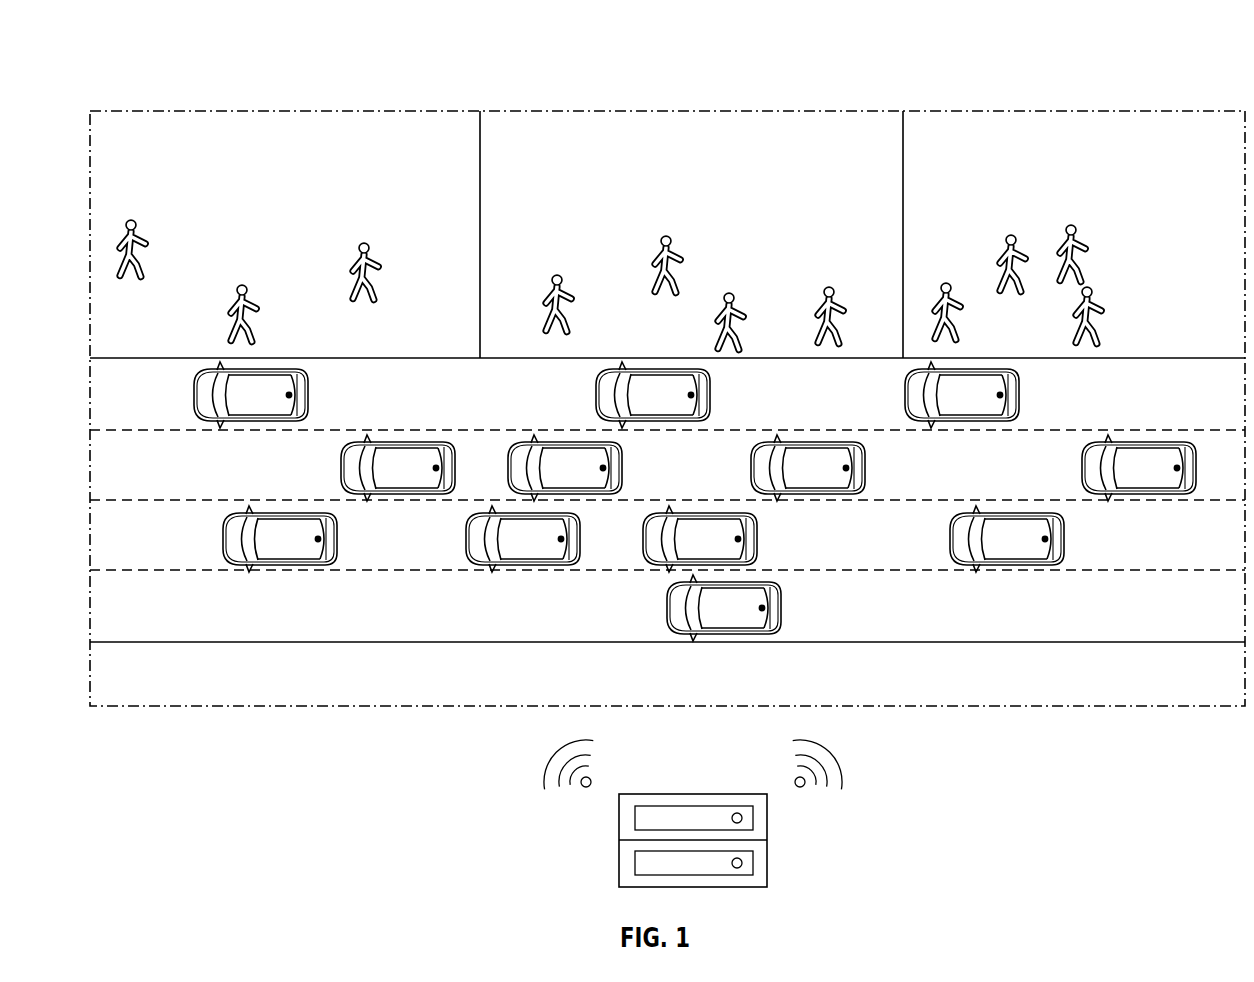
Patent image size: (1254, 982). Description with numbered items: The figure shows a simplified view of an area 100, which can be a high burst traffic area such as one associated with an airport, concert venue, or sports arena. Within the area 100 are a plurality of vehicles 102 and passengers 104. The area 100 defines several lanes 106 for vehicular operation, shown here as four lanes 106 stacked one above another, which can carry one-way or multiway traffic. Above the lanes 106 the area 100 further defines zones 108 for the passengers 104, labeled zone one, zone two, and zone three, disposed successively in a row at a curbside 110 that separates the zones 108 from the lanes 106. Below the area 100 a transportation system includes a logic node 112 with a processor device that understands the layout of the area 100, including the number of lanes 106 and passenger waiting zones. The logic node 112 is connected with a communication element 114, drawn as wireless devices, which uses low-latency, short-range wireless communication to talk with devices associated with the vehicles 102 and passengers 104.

The area 100 is at (1185, 80).
The vehicles 102 is at (1122, 490).
The passengers 104 is at (1077, 257).
The lanes 106 is at (960, 630).
The zones 108 is at (447, 128).
The curbside 110 is at (470, 356).
The logic node 112 is at (767, 817).
The communication element 114 is at (542, 778).